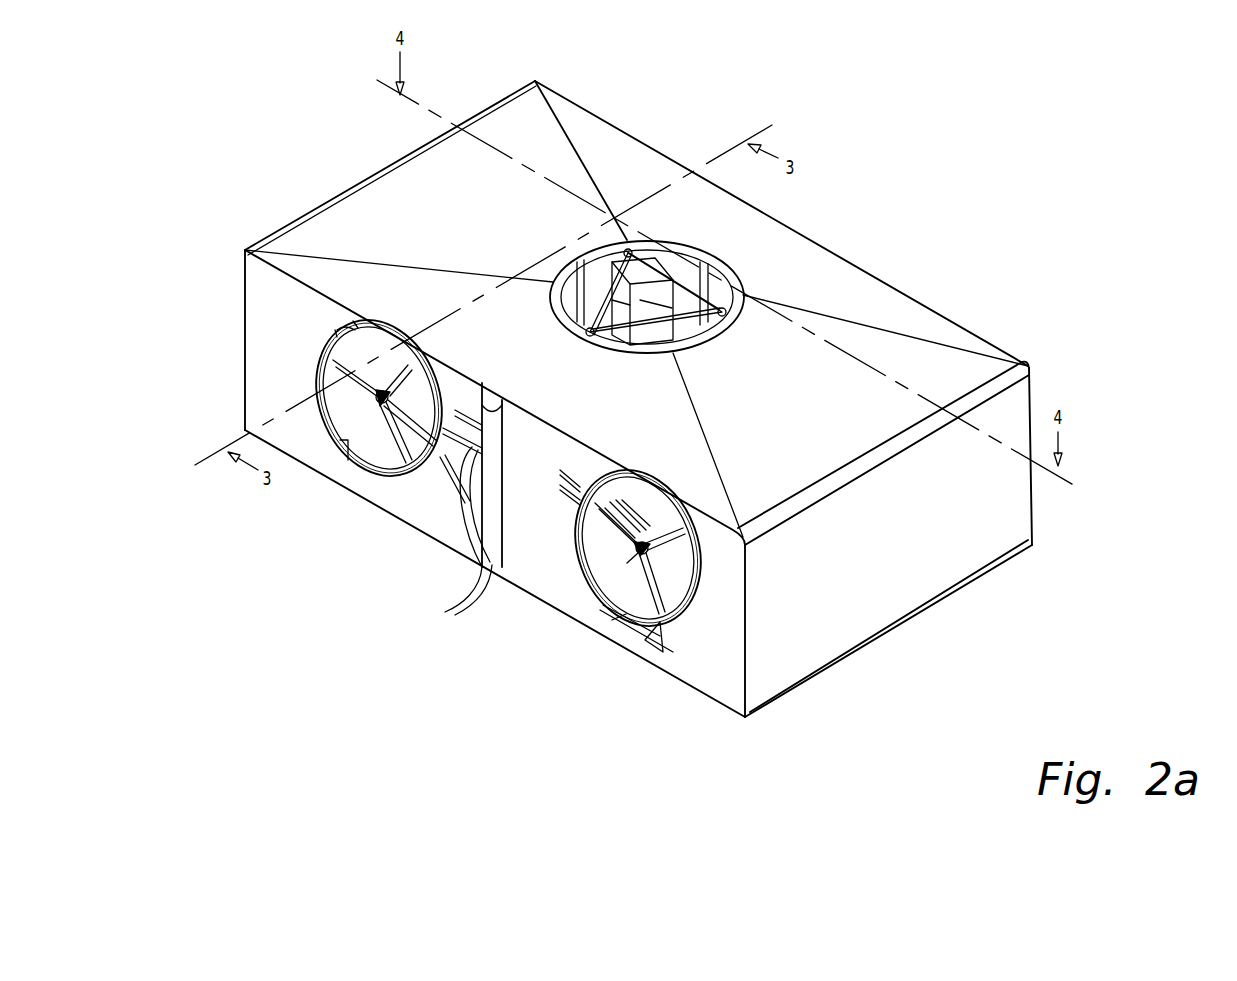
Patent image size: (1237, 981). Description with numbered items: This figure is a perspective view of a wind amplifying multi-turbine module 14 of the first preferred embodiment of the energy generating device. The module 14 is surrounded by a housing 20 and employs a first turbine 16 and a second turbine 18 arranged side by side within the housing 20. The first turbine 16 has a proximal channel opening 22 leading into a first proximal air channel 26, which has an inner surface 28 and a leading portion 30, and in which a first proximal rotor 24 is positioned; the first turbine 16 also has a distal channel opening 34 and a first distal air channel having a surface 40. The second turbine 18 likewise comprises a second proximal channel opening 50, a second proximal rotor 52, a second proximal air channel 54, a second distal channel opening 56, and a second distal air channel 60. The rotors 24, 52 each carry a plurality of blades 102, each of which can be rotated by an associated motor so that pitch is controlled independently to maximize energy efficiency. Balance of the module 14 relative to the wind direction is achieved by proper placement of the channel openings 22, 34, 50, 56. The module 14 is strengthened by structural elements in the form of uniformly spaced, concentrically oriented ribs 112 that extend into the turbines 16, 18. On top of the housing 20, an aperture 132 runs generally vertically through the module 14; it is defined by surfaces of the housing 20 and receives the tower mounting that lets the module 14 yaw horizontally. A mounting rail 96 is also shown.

The wind amplifying multi-turbine module 14 is at (450, 722).
The first turbine 16 is at (380, 440).
The second turbine 18 is at (682, 608).
The housing 20 is at (292, 222).
The proximal channel opening 22 is at (362, 458).
The first proximal rotor 24 is at (328, 363).
The first proximal air channel 26 is at (320, 362).
The inner surface 28 is at (343, 333).
The leading portion 30 is at (345, 358).
The distal channel opening 34 is at (413, 478).
The surface 40 is at (380, 478).
The second proximal channel opening 50 is at (677, 610).
The second proximal rotor 52 is at (610, 552).
The second proximal air channel 54 is at (683, 583).
The second distal channel opening 56 is at (642, 640).
The second distal air channel 60 is at (598, 553).
The mounting rail 96 is at (552, 490).
The blades 102 is at (352, 328).
The ribs 112 is at (503, 575).
The aperture 132 is at (630, 238).